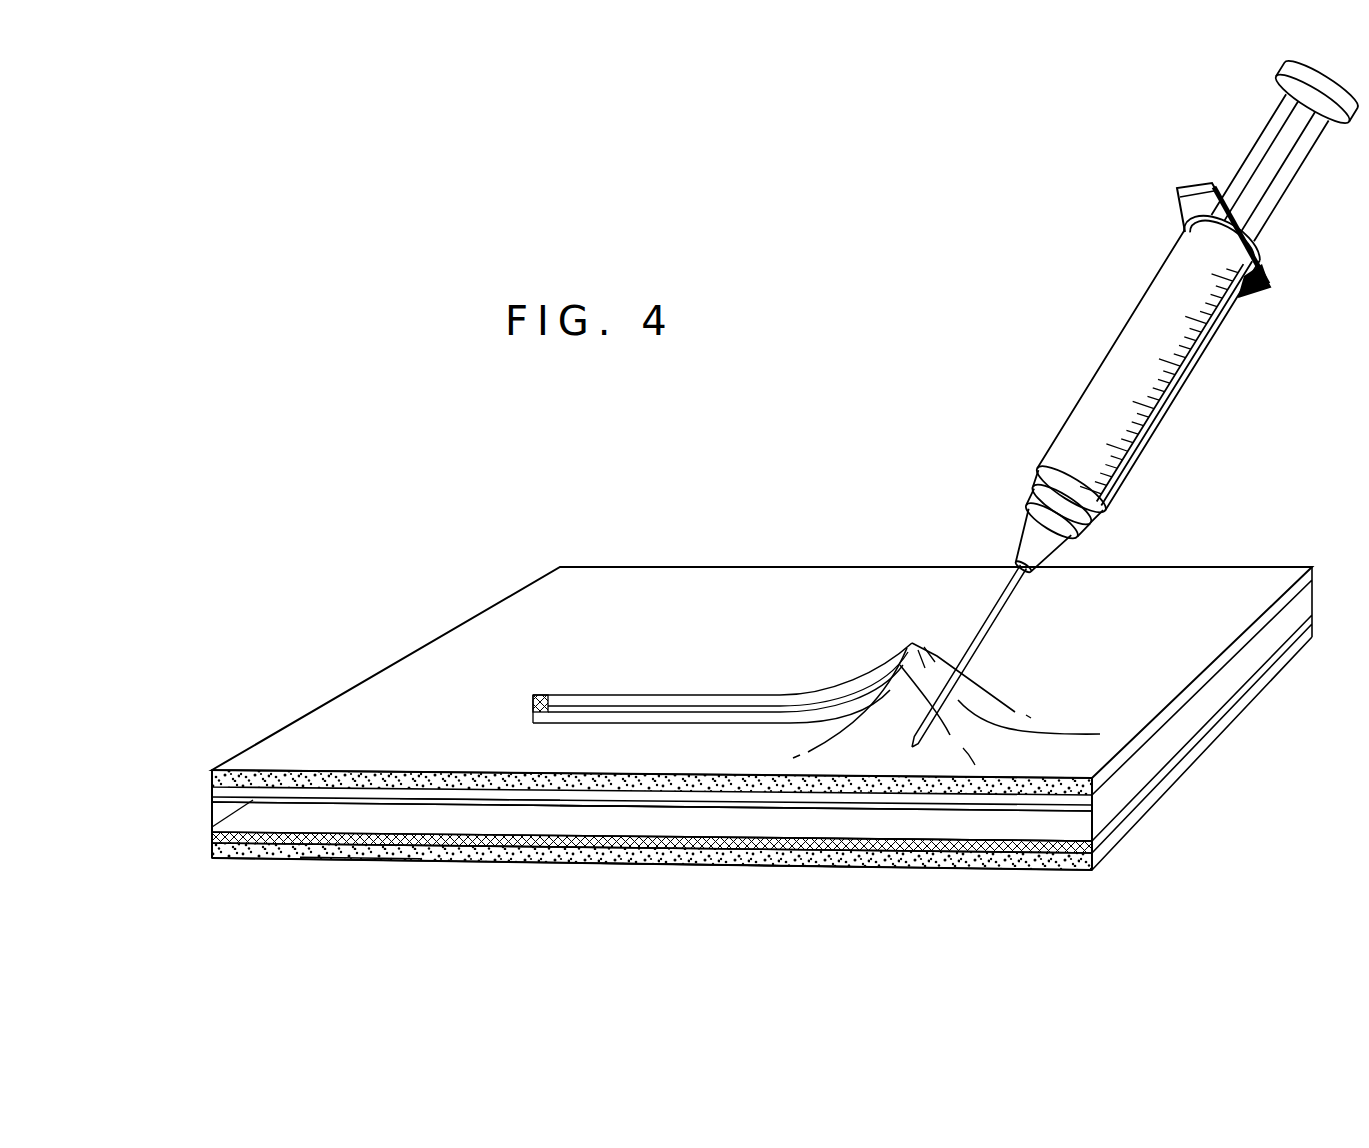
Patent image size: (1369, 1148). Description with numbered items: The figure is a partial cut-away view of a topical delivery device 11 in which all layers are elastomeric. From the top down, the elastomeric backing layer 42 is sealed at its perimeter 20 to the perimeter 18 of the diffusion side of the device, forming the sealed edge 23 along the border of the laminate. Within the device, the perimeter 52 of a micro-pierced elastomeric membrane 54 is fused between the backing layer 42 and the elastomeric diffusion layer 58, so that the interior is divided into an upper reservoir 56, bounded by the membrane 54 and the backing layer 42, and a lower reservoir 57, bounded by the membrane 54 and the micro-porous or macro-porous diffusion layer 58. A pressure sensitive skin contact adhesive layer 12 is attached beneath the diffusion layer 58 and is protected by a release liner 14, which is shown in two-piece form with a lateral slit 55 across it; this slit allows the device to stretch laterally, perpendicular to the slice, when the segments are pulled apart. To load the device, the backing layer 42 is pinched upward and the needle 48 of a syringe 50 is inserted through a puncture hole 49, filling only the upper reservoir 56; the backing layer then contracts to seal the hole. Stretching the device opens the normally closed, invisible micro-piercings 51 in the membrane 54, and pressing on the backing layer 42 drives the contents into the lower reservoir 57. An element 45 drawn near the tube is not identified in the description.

The topical delivery device 11 is at (460, 578).
The pressure sensitive skin contact adhesive layer 12 is at (267, 858).
The release liner 14 is at (322, 864).
The perimeter of diffusion membrane 18 is at (210, 840).
The perimeter of backing layer 20 is at (213, 790).
The sealed edge 23 is at (212, 813).
The elastomeric backing layer 42 is at (710, 593).
The catheter tube 45 is at (787, 705).
The needle 48 is at (975, 637).
The puncture hole 49 is at (1100, 734).
The syringe 50 is at (1178, 398).
The micro-piercings 51 is at (905, 820).
The perimeter of micro-pierced elastomeric membrane 52 is at (210, 797).
The micro-pierced elastomeric membrane 54 is at (477, 800).
The lateral slit 55 is at (681, 882).
The reservoir 56 is at (648, 800).
The reservoir 57 is at (566, 824).
The elastomeric diffusion layer 58 is at (729, 862).